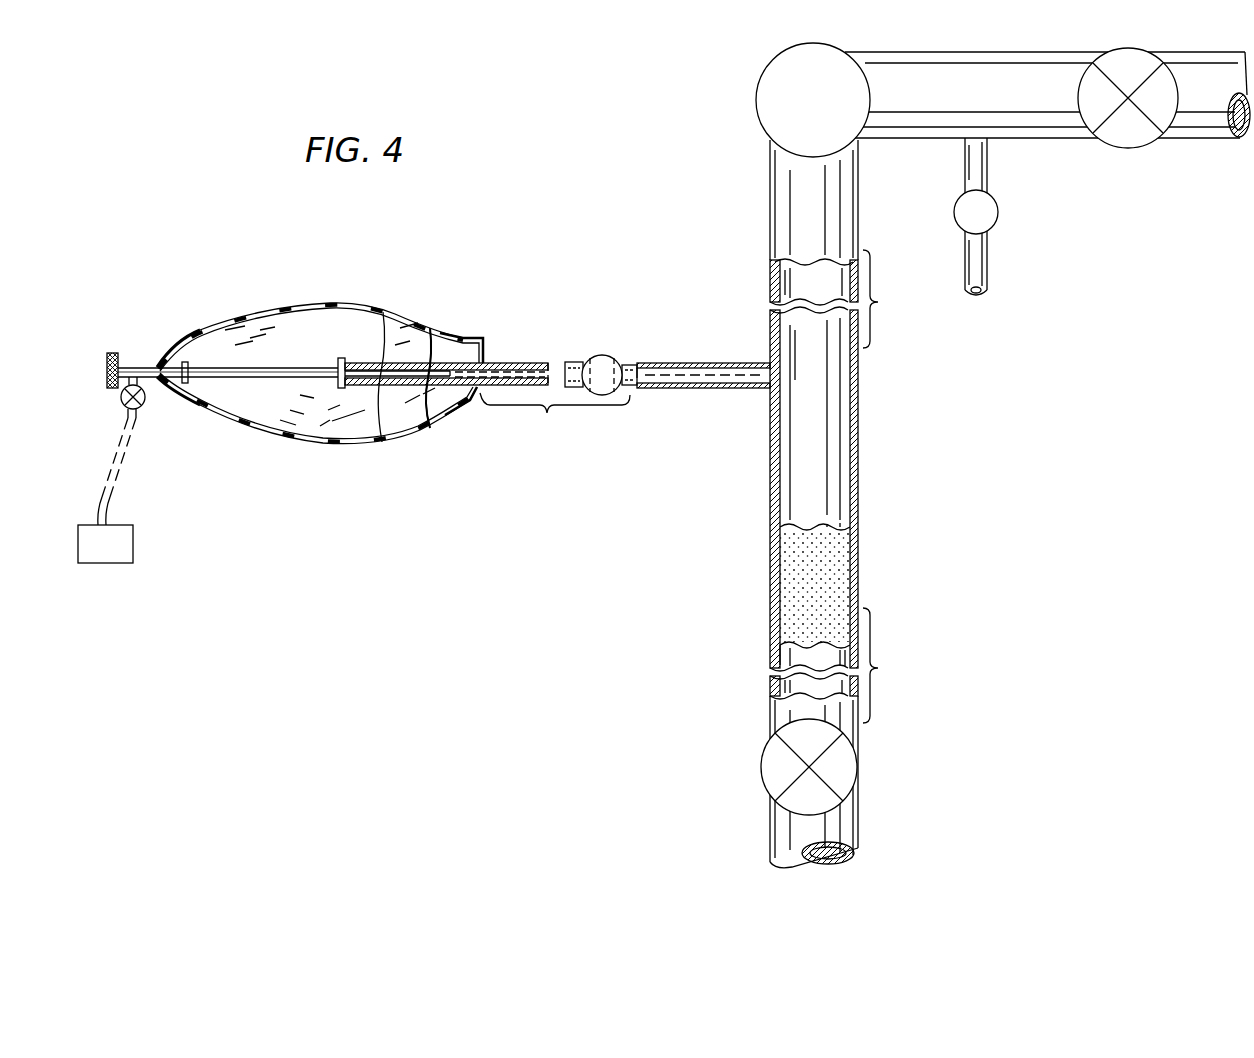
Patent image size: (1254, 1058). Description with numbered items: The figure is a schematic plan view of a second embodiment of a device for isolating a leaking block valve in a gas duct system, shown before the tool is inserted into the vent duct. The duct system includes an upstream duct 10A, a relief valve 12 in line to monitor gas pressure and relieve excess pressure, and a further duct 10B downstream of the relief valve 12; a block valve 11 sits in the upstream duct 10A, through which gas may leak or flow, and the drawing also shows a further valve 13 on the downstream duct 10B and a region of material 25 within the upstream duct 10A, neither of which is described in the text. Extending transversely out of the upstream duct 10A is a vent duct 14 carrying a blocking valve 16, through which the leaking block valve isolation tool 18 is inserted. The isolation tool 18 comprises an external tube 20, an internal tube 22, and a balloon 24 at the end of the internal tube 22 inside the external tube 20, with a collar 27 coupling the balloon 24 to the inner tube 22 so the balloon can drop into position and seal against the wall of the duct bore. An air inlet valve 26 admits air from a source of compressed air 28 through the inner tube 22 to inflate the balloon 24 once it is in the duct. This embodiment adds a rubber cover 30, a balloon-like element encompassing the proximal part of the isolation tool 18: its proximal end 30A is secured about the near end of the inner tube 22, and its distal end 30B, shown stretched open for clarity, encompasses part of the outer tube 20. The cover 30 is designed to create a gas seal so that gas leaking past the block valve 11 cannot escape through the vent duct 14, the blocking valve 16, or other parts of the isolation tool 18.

The upstream duct 10A is at (857, 603).
The further duct 10B is at (1028, 140).
The block valve 11 is at (858, 767).
The relief valve 12 is at (762, 72).
The upper valve 13 is at (1150, 142).
The vent duct 14 is at (687, 362).
The blocking valve 16 is at (612, 350).
The leaking block valve isolation tool 18 is at (363, 413).
The external tube 20 is at (365, 362).
The internal tube 22 is at (150, 366).
The balloon 24 is at (513, 368).
The particulate material 25 is at (855, 555).
The air inlet valve 26 is at (145, 403).
The collar 27 is at (423, 340).
The source of compressed air 28 is at (133, 543).
The rubber cover 30 is at (260, 313).
The proximal end of cover 30A is at (160, 365).
The distal end of cover 30B is at (467, 338).